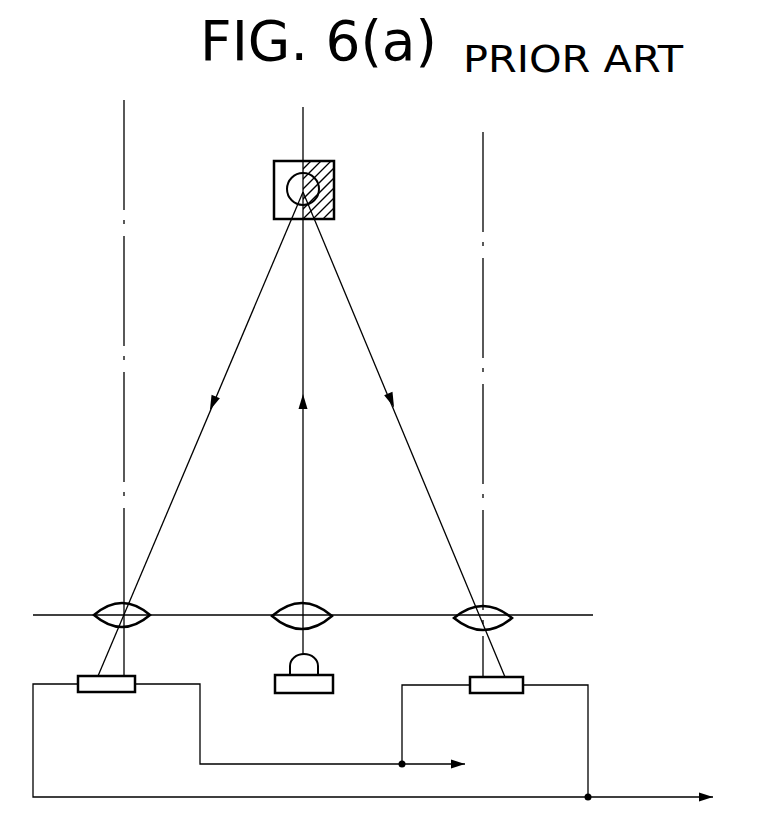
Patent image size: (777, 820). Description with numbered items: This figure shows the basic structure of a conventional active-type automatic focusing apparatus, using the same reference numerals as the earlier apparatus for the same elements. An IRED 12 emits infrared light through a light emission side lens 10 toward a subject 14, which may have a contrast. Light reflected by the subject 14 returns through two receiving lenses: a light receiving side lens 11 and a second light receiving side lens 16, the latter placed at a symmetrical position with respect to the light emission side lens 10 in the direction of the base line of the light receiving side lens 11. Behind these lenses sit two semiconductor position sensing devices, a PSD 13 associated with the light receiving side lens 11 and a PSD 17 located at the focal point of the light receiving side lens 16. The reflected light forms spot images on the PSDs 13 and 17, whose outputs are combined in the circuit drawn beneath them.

The subject 14 is at (274, 180).
The light receiving side lens 16 is at (143, 608).
The light emission side lens 10 is at (320, 608).
The light receiving side lens 11 is at (507, 608).
The PSD 17 is at (135, 676).
The semiconductor position sensing device (PSD) 13 is at (503, 693).
The IRED 12 is at (320, 695).